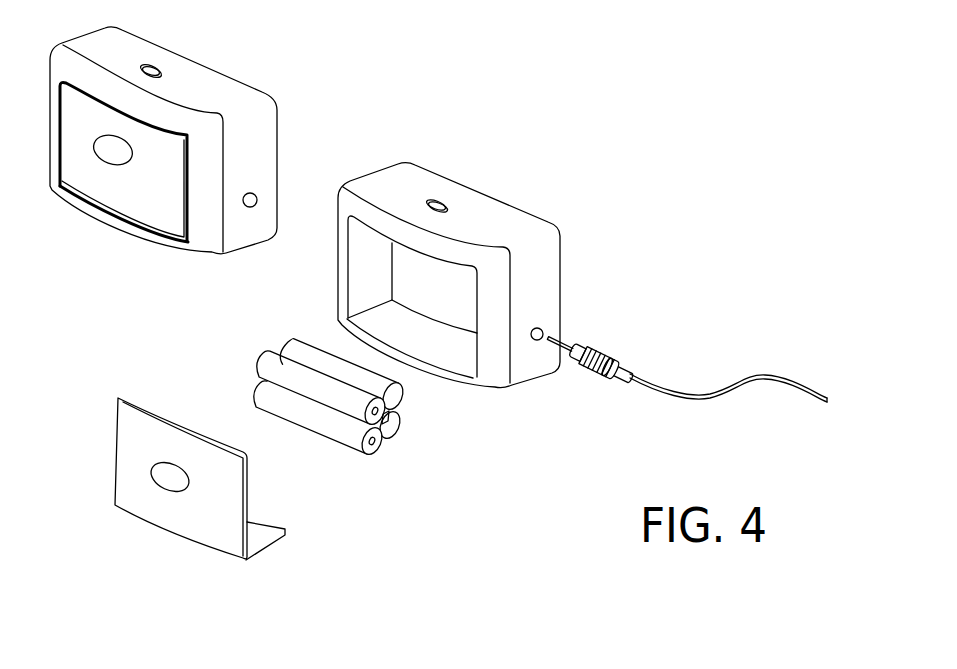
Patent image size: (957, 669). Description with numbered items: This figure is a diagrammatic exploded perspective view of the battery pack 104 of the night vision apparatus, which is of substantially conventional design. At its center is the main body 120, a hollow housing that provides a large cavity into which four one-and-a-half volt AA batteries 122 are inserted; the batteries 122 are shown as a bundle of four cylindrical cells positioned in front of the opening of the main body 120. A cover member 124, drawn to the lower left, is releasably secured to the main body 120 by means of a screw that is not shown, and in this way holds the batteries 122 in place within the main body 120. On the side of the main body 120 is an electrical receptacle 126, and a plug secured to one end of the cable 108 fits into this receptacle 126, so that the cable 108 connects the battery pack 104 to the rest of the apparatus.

The battery pack 104 is at (364, 130).
The main body 120 is at (465, 208).
The electrical receptacle 126 is at (543, 330).
The cable 108 is at (658, 382).
The batteries 122 is at (370, 452).
The cover member 124 is at (135, 450).